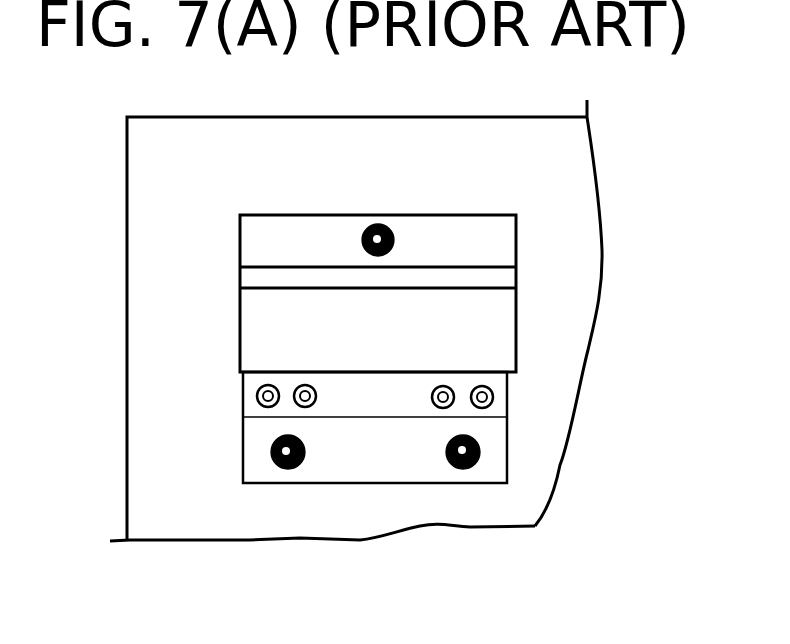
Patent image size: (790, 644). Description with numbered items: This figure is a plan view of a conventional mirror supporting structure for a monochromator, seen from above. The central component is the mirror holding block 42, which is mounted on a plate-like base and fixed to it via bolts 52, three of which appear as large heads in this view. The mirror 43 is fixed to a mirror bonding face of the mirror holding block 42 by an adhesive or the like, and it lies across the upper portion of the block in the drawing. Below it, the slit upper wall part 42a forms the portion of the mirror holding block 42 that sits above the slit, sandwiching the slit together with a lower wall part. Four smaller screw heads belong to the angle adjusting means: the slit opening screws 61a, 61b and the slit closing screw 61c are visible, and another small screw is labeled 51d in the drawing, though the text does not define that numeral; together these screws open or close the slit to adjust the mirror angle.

The mirror holding block 42 is at (478, 235).
The slit upper wall part 42a is at (377, 397).
The mirror 43 is at (488, 337).
The bolts 52 is at (390, 220).
The slit opening screw 61a is at (493, 401).
The slit opening screw 61b is at (257, 401).
The slit closing screw 61c is at (455, 405).
The small screw 51d is at (295, 400).